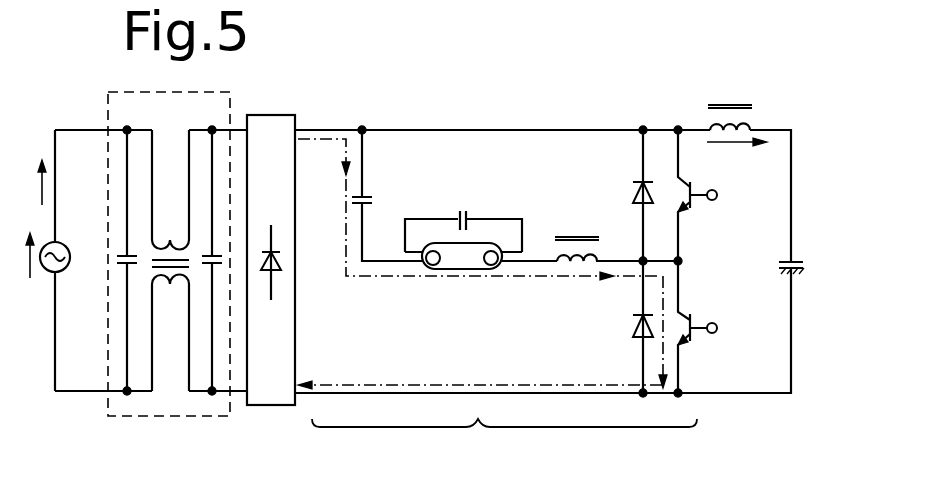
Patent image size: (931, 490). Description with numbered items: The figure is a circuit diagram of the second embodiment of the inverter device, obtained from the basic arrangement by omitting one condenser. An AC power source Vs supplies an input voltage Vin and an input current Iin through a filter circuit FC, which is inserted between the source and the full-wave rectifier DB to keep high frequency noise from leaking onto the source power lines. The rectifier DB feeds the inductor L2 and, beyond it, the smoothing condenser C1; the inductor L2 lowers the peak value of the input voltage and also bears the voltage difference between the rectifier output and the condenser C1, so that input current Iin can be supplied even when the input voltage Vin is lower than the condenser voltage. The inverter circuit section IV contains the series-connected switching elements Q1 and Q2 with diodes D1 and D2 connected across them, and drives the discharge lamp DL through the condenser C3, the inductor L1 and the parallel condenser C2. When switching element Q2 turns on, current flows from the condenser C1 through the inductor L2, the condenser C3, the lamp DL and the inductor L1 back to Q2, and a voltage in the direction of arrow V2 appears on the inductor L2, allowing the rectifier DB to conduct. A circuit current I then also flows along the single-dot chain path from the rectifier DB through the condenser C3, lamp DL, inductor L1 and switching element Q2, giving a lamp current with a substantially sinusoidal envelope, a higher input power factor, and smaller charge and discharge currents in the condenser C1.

The AC power source Vs is at (67, 249).
The input current Iin is at (31, 166).
The input voltage Vin is at (23, 275).
The filter circuit FC is at (148, 418).
The full-wave rectifier DB is at (271, 247).
The circuit current I is at (360, 384).
The condenser C3 is at (387, 193).
The condenser C2 is at (463, 217).
The discharge lamp DL is at (462, 269).
The inductor L1 is at (616, 236).
The diode D1 is at (625, 195).
The diode D2 is at (625, 329).
The switching element Q1 is at (700, 195).
The switching element Q2 is at (700, 329).
The inductor L2 is at (730, 105).
The voltage V2 is at (737, 157).
The smoothing condenser C1 is at (804, 252).
The inverter circuit section IV is at (504, 445).